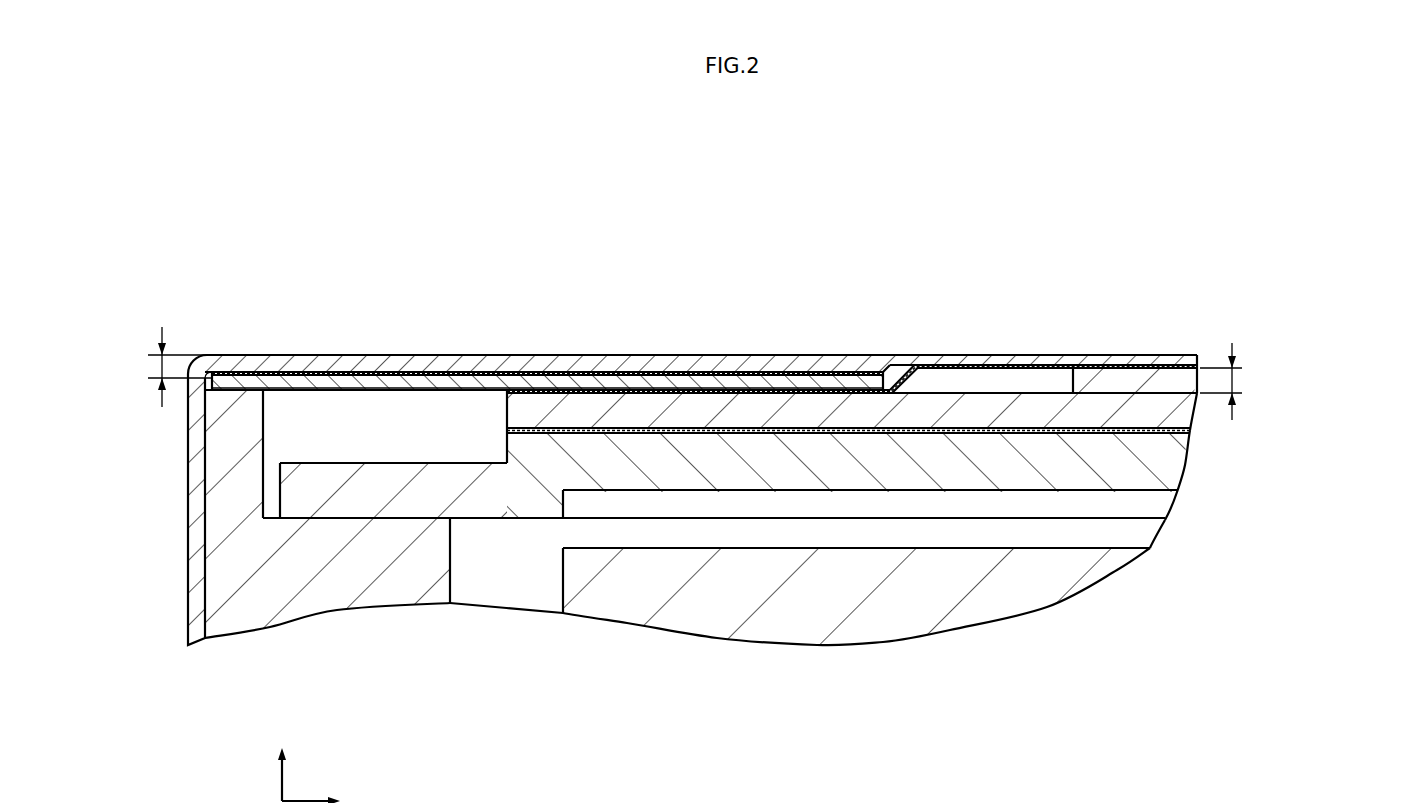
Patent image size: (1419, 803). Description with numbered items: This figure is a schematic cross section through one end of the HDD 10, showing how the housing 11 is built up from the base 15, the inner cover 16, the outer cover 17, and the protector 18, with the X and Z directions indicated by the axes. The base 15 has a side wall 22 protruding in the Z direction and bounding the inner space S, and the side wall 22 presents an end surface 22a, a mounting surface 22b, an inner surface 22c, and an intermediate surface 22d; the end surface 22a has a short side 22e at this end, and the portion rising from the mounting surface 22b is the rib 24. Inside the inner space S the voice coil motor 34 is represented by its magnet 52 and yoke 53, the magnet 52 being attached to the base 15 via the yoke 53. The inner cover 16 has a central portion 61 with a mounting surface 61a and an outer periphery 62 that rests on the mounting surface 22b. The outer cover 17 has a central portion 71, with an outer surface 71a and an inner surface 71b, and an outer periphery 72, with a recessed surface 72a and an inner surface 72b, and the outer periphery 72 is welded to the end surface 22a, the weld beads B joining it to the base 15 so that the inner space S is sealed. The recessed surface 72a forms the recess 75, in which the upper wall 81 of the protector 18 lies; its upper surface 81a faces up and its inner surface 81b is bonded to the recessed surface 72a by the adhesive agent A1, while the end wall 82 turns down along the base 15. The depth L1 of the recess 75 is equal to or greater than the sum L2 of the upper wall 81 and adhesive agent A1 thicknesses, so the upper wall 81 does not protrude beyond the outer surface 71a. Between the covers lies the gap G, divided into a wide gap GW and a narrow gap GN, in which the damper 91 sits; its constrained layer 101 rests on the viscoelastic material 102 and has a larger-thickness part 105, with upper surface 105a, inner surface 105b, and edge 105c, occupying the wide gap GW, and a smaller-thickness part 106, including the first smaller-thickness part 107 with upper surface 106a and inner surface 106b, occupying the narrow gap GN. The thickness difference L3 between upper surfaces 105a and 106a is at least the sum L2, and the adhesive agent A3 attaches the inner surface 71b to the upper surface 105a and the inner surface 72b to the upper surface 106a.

The HDD 10 is at (170, 195).
The housing 11 is at (178, 552).
The base 15 is at (388, 592).
The inner cover 16 is at (1167, 480).
The outer cover 17 is at (1110, 362).
The protector 18 is at (124, 509).
The side wall 22 is at (356, 542).
The end surface 22a is at (692, 297).
The mounting surface 22b is at (343, 520).
The inner surface 22c is at (462, 588).
The intermediate surface 22d is at (265, 412).
The short side 22e is at (240, 377).
The rib 24 is at (220, 437).
The voice coil motor 34 is at (800, 632).
The magnet 52 is at (800, 632).
The yoke 53 is at (972, 620).
The central portion 61 is at (914, 476).
The mounting surface 61a is at (812, 432).
The outer periphery 62 is at (308, 512).
The central portion 71 is at (1043, 303).
The outer surface 71a is at (960, 355).
The inner surface 71b is at (950, 366).
The outer periphery 72 is at (580, 388).
The recessed surface 72a is at (620, 388).
The inner surface 72b is at (420, 395).
The recess 75 is at (892, 352).
The upper wall 81 is at (722, 366).
The upper surface 81a is at (680, 355).
The inner surface 81b is at (748, 380).
The end wall 82 is at (195, 478).
The damper 91 is at (948, 410).
The constrained layer 101 is at (1185, 417).
The viscoelastic material 102 is at (540, 427).
The larger-thickness part 105 is at (948, 410).
The upper surface 105a is at (1140, 369).
The inner surface 105b is at (1133, 436).
The edge 105c is at (1063, 372).
The smaller-thickness part 106 is at (852, 309).
The upper surface 106a is at (990, 367).
The inner surface 106b is at (653, 430).
The first smaller-thickness part 107 is at (840, 395).
The adhesive agent A1 is at (380, 355).
The adhesive agent A3 is at (1180, 354).
The weld beads B is at (200, 362).
The gap G is at (996, 319).
The wide gap GW is at (1013, 374).
The narrow gap GN is at (497, 407).
The depth L1 is at (144, 367).
The sum of thicknesses L2 is at (144, 367).
The thickness difference L3 is at (1236, 381).
The inner space S is at (1154, 530).
The X direction X is at (320, 798).
The Z direction Z is at (280, 762).